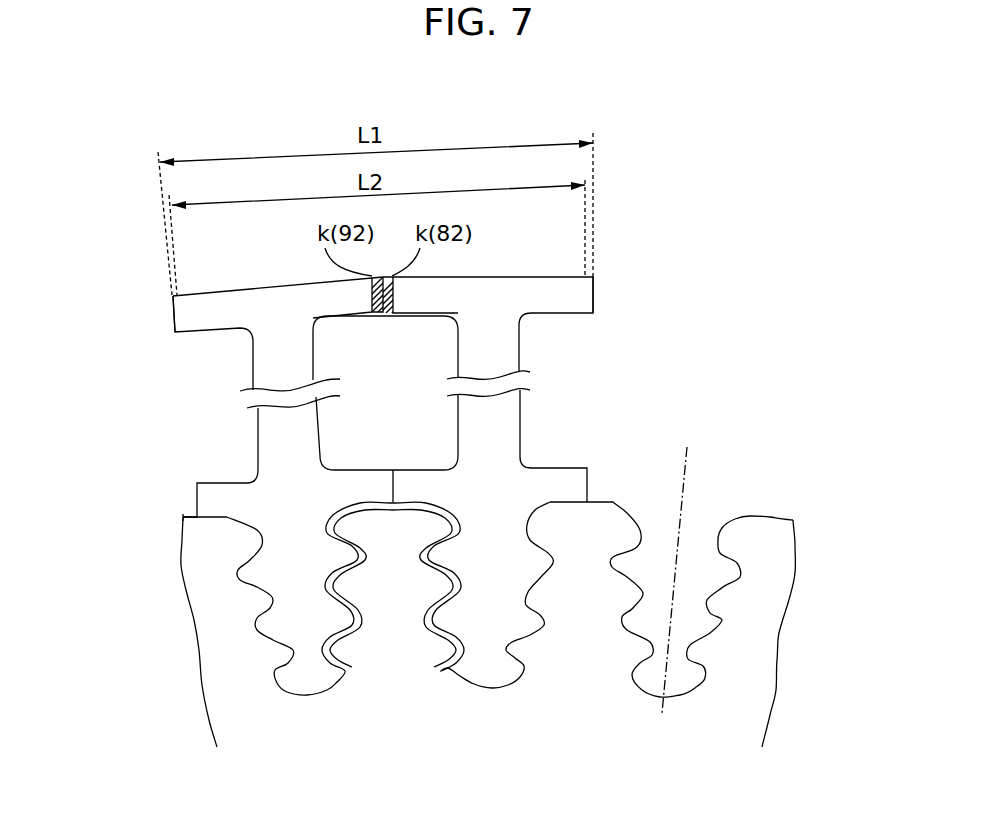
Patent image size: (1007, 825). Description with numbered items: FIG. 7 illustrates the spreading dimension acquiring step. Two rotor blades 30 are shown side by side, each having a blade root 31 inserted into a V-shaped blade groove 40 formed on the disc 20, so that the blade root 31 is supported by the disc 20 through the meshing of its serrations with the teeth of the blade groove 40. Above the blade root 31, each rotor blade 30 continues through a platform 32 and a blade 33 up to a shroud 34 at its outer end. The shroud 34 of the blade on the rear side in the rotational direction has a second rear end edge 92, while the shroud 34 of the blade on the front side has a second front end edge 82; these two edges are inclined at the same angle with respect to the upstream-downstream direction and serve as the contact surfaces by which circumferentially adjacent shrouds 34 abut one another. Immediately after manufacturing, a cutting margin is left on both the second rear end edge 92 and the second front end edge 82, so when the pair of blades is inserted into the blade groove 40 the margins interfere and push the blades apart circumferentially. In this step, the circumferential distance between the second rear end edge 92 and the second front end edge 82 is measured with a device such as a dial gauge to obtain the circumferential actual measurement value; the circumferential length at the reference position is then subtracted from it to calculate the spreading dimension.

The disc 20 is at (758, 613).
The rotor blade 30 is at (373, 351).
The blade root 31 is at (294, 677).
The platform 32 is at (207, 502).
The blade 33 is at (280, 437).
The shroud 34 is at (185, 312).
The blade groove 40 is at (354, 670).
The second front end edge 82 is at (595, 302).
The second rear end edge 92 is at (173, 323).